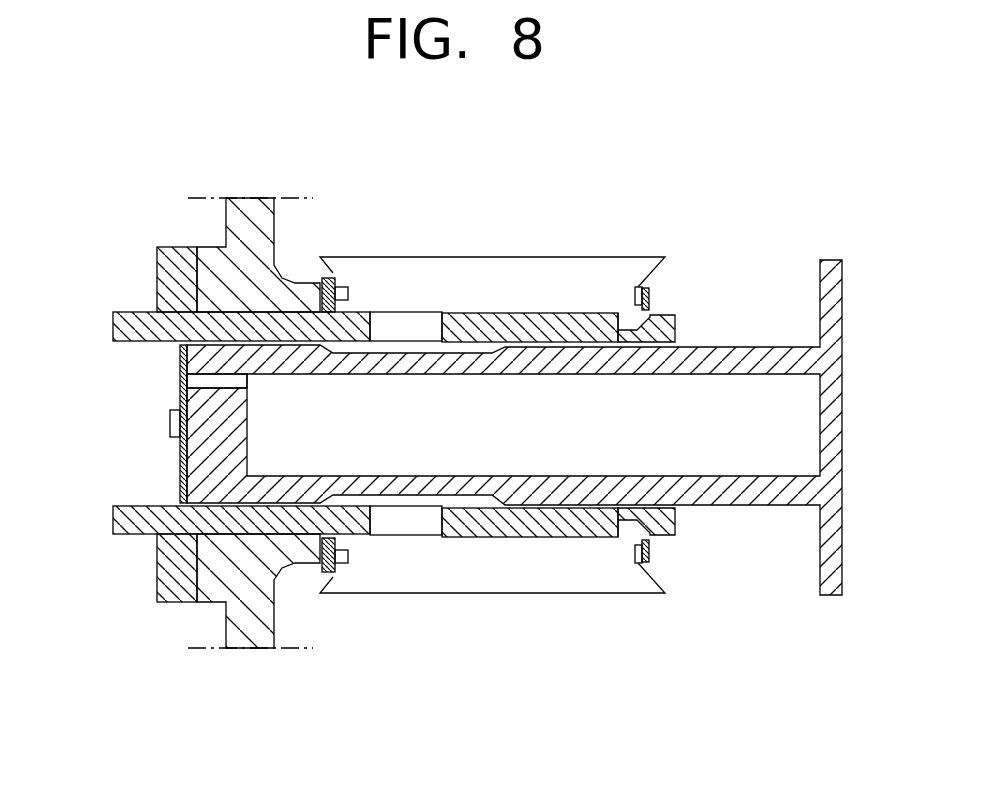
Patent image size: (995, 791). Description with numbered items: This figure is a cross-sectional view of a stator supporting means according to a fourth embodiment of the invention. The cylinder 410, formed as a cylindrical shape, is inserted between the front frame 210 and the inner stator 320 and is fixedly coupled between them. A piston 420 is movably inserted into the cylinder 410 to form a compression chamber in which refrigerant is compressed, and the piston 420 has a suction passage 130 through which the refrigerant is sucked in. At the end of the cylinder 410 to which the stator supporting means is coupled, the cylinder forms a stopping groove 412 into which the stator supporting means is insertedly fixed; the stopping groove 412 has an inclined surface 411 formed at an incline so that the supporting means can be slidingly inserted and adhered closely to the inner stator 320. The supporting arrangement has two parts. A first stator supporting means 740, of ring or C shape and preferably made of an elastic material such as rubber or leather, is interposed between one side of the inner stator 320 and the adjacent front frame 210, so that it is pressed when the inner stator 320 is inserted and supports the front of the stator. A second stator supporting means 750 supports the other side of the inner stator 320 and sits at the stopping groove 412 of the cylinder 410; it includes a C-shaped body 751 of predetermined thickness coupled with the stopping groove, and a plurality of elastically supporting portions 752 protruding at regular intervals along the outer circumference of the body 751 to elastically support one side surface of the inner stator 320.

The suction passage 130 is at (293, 377).
The front frame 210 is at (250, 636).
The inner stator 320 is at (483, 584).
The cylinder 410 is at (150, 518).
The inclined surface 411 is at (650, 315).
The stopping groove 412 is at (619, 313).
The piston 420 is at (200, 466).
The first stator supporting means 740 is at (335, 580).
The second stator supporting means 750 is at (650, 618).
The body 751 is at (655, 549).
The elastically supporting portions 752 is at (634, 548).